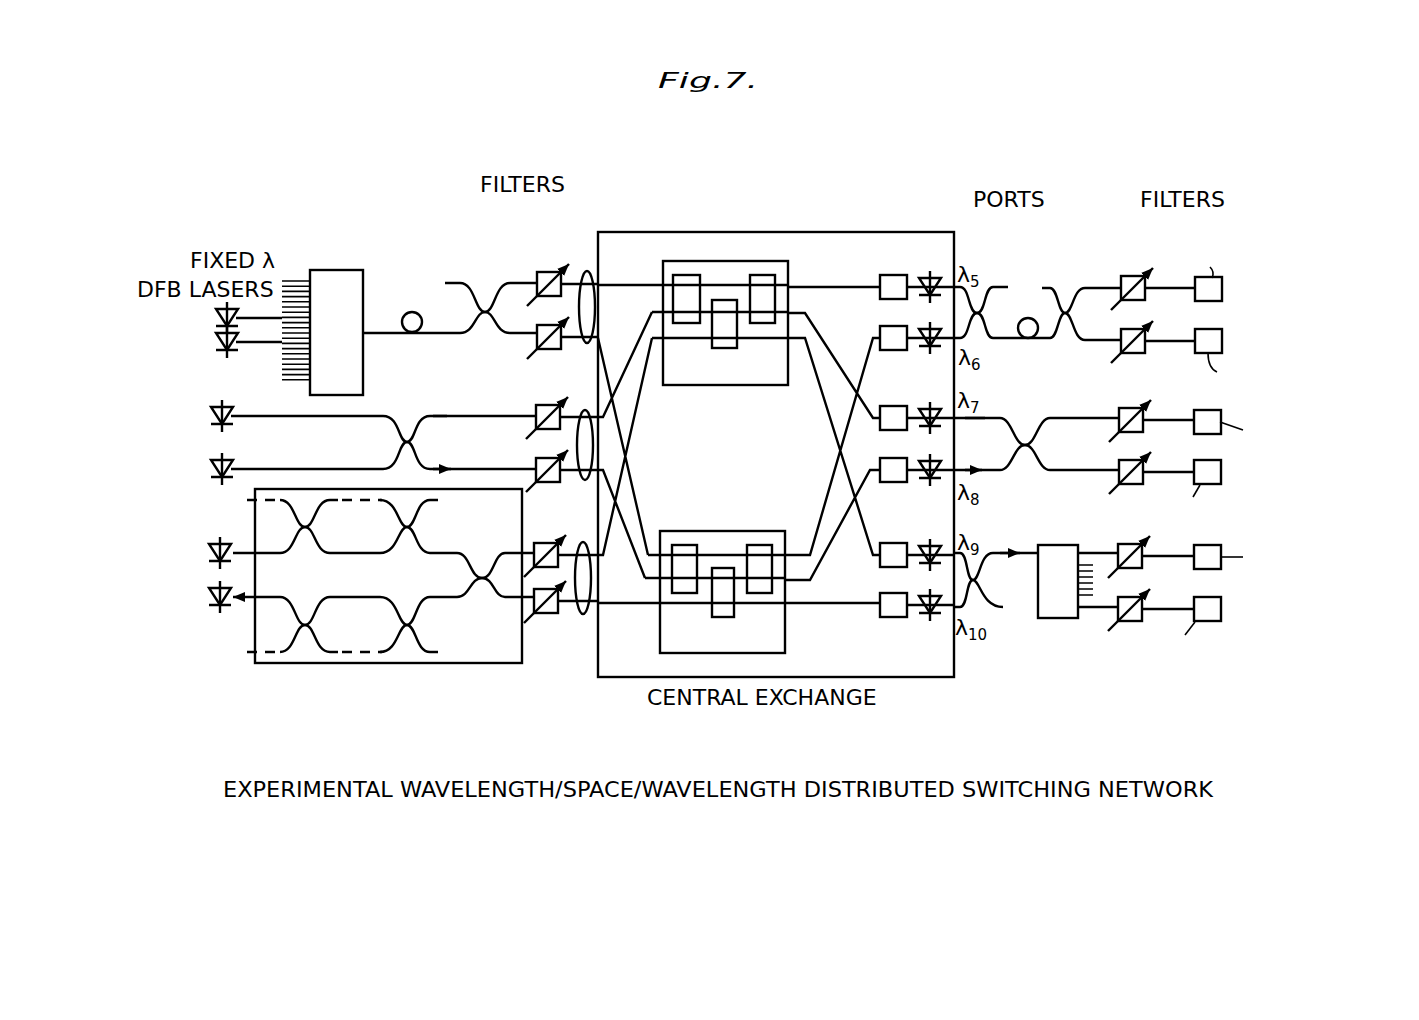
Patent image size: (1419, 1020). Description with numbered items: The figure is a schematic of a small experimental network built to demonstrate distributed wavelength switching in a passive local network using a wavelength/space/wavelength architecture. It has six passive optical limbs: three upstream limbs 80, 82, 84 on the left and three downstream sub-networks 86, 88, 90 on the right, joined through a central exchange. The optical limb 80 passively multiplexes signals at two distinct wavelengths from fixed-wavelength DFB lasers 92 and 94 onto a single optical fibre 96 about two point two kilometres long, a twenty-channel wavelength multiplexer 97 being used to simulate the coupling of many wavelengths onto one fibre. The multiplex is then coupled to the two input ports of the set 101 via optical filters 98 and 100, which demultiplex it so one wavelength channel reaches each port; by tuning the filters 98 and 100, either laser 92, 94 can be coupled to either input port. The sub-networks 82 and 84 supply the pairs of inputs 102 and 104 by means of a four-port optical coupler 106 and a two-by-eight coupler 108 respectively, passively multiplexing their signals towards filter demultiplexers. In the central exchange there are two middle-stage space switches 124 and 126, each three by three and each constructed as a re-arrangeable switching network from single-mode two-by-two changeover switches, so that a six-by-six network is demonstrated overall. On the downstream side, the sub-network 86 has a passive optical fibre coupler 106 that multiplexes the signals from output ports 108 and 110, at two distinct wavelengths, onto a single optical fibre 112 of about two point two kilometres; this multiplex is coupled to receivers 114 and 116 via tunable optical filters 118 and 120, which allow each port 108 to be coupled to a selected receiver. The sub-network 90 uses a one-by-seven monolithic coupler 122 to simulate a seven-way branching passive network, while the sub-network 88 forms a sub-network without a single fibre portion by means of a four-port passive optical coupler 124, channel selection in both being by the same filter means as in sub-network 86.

The optical limb 80 is at (412, 283).
The sub-network 82 is at (185, 443).
The sub-network 84 is at (220, 655).
The sub-network 86 is at (1237, 287).
The sub-network 88 is at (1237, 465).
The sub-network 90 is at (1228, 607).
The laser 92 is at (222, 312).
The laser 94 is at (222, 351).
The single optical fibre 96 is at (450, 333).
The 20-channel wavelength multiplexer 97 is at (312, 271).
The optical filter 98 is at (547, 272).
The optical filter 100 is at (530, 305).
The set of input ports 101 is at (587, 271).
The pair of inputs 102 is at (622, 450).
The pair of inputs 104 is at (582, 614).
The 4-port optical coupler 106 is at (412, 438).
The 2×8 coupler 108 is at (352, 663).
The output port 110 is at (985, 352).
The optical fibre 112 is at (1053, 340).
The receiver 114 is at (1222, 290).
The receiver 116 is at (1222, 343).
The tunable optical filter 118 is at (1137, 273).
The tunable optical filter 120 is at (1147, 352).
The 1×7 monolithic coupler 122 is at (1065, 618).
The space switch 124 is at (747, 260).
The space switch 126 is at (785, 637).